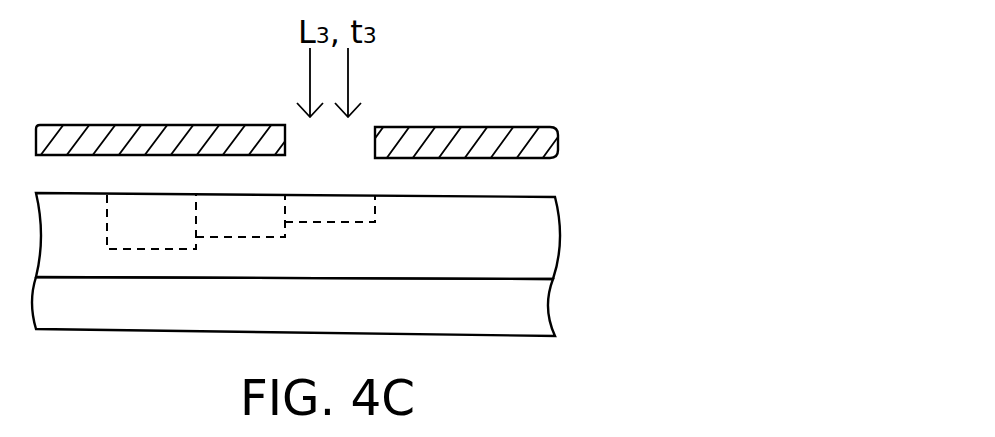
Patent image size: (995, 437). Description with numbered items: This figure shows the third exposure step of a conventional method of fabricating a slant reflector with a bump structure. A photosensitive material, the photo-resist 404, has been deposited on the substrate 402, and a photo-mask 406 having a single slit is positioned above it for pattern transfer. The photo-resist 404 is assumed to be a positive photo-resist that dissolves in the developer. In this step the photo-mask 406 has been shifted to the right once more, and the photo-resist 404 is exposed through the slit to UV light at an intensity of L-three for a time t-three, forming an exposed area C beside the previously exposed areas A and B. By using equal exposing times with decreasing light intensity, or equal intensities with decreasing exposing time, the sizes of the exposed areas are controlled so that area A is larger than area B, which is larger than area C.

The substrate 402 is at (543, 310).
The photo-resist 404 is at (543, 245).
The photo-mask 406 is at (545, 143).